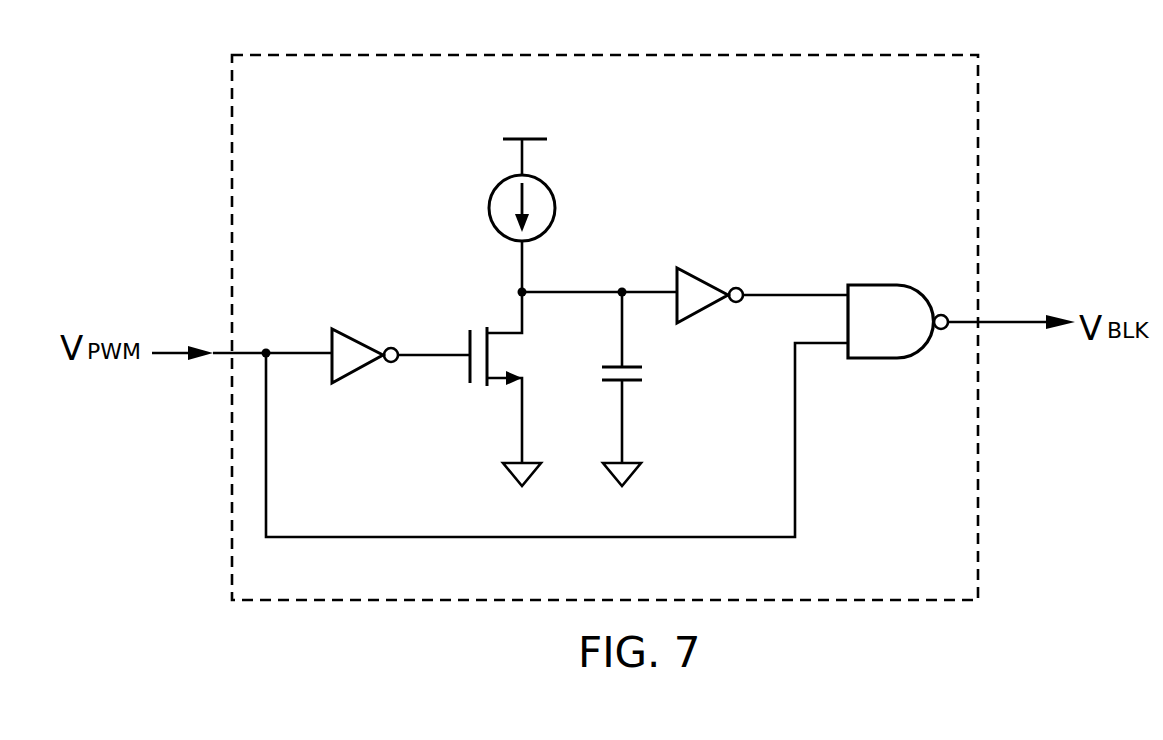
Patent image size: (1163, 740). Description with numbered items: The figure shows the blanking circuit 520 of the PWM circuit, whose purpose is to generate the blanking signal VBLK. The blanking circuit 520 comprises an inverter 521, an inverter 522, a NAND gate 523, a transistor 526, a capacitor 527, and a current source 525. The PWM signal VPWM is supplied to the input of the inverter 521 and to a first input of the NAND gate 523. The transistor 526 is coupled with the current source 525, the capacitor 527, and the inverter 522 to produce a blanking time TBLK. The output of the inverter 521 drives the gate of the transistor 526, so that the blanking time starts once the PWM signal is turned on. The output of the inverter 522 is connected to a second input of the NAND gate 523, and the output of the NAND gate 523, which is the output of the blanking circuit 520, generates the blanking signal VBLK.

The blanking circuit 520 is at (980, 116).
The inverter 521 is at (360, 332).
The inverter 522 is at (705, 274).
The NAND gate 523 is at (880, 280).
The current source 525 is at (556, 209).
The transistor 526 is at (478, 393).
The capacitor 527 is at (650, 377).